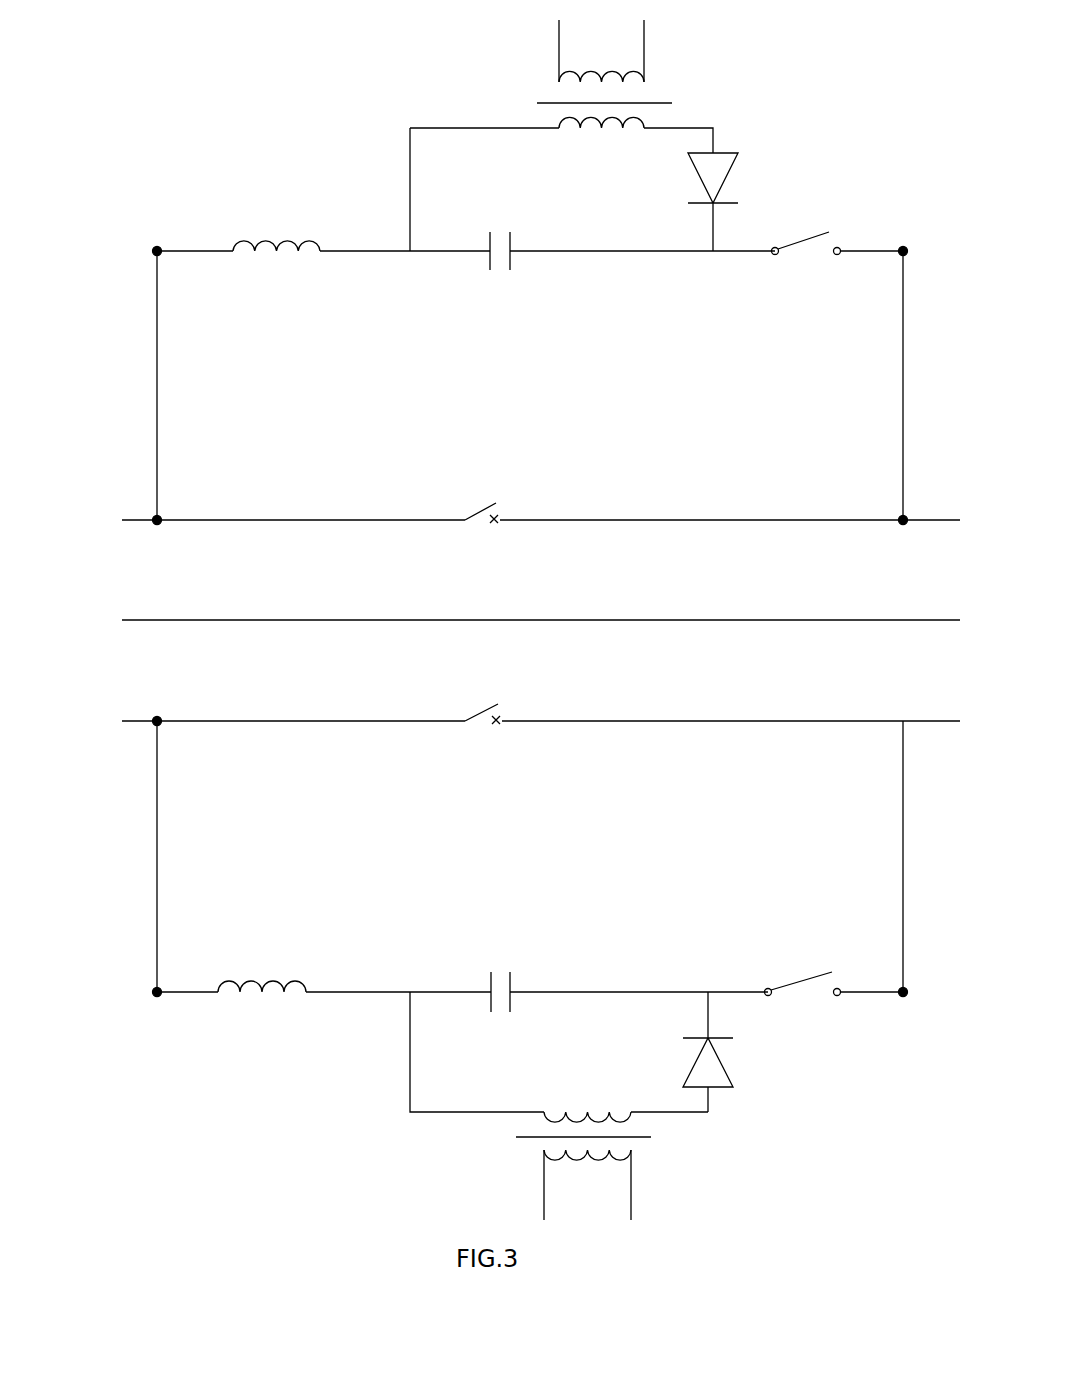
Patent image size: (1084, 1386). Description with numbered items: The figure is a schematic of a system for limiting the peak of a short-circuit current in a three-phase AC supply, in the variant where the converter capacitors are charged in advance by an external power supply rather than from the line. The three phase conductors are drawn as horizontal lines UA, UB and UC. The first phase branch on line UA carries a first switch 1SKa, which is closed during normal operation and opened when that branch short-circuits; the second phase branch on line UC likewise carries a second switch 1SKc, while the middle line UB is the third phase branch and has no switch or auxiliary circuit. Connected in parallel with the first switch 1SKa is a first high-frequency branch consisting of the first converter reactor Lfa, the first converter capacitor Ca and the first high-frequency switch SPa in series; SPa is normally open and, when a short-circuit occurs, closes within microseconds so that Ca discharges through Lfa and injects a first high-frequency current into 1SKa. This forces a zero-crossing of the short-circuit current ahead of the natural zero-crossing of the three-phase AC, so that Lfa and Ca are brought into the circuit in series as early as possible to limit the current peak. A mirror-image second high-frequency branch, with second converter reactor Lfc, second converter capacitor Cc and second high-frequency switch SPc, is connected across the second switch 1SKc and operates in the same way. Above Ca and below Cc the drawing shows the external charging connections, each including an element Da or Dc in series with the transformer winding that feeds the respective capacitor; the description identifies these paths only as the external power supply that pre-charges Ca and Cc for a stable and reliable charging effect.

The phase A line UA is at (503, 396).
The phase B line UB is at (504, 620).
The phase C line UC is at (504, 847).
The first switch 1SKa is at (499, 542).
The second switch 1SKc is at (496, 741).
The first converter reactor Lfa is at (322, 273).
The second converter reactor Lfc is at (322, 1012).
The first converter capacitor Ca is at (628, 282).
The second converter capacitor Cc is at (618, 1015).
The phase A diode Da is at (746, 202).
The phase C diode Dc is at (736, 1052).
The first high-frequency switch SPa is at (840, 274).
The second high-frequency switch SPc is at (836, 966).